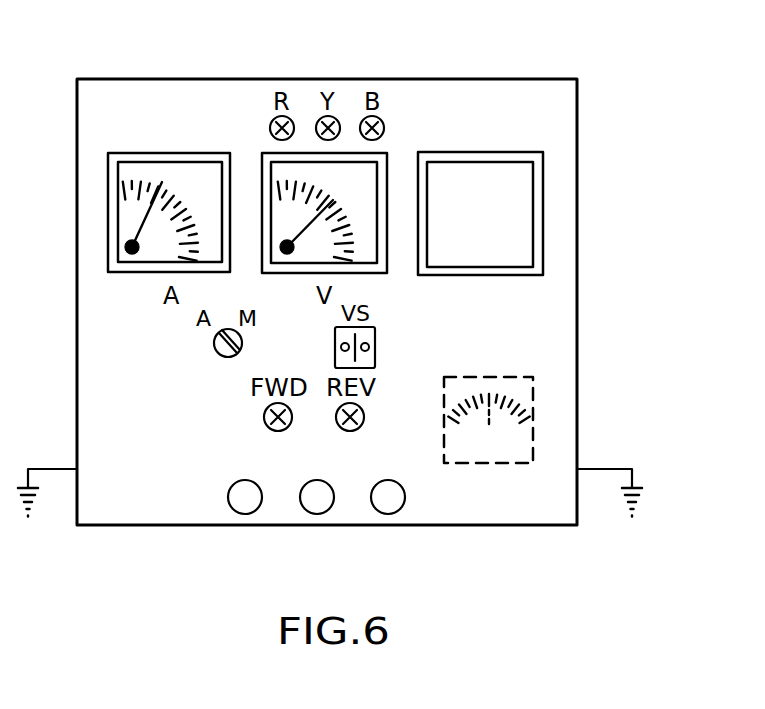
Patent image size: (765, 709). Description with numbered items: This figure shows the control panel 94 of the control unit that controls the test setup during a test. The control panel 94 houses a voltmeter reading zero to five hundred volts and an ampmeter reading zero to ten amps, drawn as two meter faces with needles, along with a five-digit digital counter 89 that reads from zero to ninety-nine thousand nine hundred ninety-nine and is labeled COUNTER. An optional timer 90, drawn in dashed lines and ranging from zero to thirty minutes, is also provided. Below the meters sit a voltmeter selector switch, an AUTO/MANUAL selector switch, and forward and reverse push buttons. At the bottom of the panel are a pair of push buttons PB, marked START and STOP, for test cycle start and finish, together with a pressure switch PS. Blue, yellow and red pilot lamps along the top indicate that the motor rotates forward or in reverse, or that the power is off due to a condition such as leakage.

The digital counter 89 is at (530, 217).
The control panel 94 is at (538, 332).
The timer 90 is at (533, 425).
The push buttons PB is at (248, 513).
The pressure switch PS is at (390, 514).